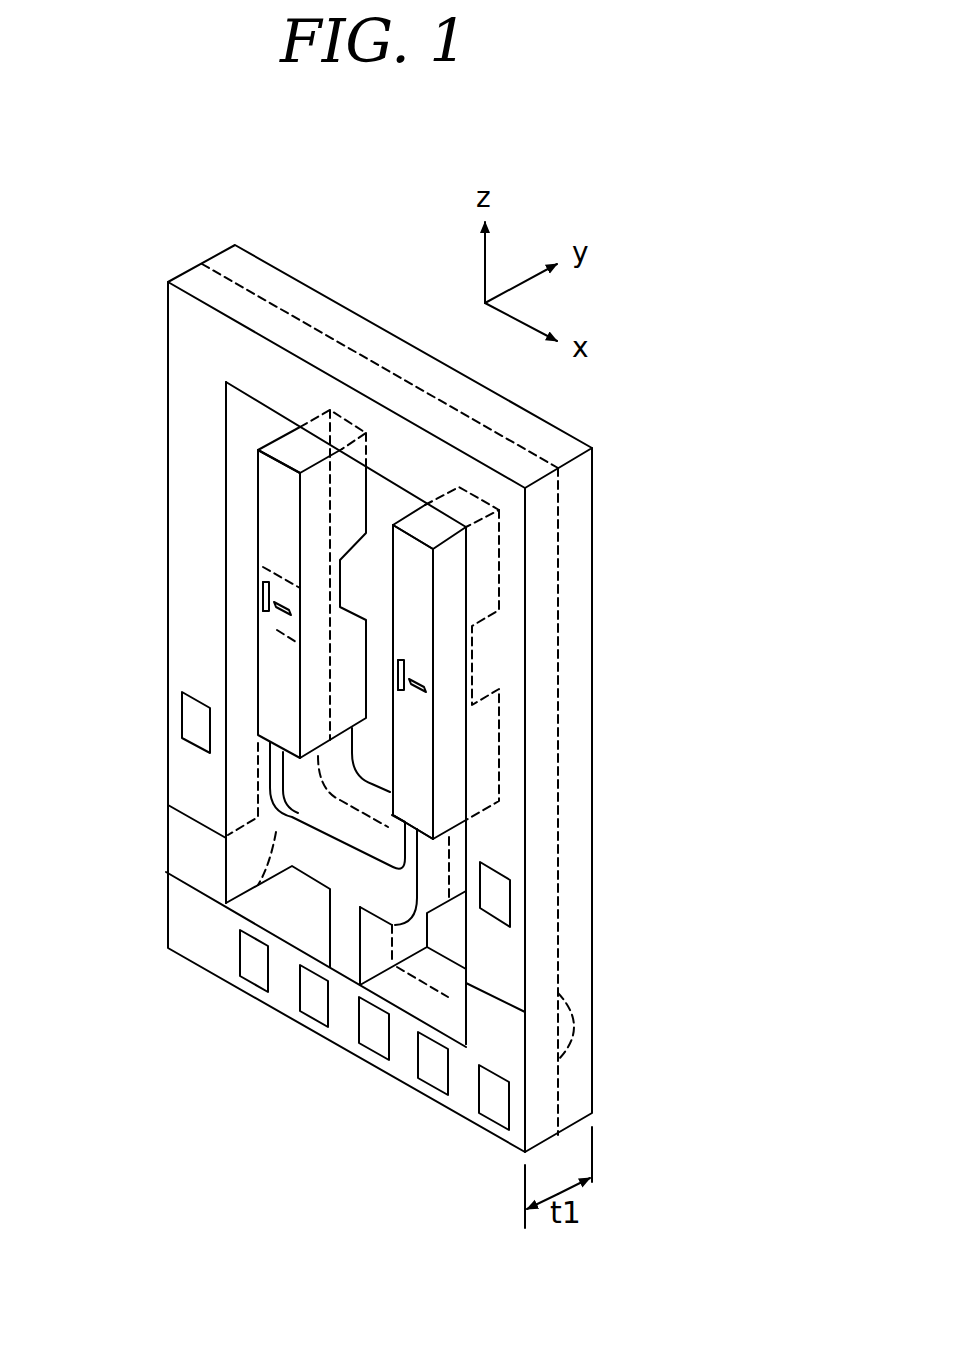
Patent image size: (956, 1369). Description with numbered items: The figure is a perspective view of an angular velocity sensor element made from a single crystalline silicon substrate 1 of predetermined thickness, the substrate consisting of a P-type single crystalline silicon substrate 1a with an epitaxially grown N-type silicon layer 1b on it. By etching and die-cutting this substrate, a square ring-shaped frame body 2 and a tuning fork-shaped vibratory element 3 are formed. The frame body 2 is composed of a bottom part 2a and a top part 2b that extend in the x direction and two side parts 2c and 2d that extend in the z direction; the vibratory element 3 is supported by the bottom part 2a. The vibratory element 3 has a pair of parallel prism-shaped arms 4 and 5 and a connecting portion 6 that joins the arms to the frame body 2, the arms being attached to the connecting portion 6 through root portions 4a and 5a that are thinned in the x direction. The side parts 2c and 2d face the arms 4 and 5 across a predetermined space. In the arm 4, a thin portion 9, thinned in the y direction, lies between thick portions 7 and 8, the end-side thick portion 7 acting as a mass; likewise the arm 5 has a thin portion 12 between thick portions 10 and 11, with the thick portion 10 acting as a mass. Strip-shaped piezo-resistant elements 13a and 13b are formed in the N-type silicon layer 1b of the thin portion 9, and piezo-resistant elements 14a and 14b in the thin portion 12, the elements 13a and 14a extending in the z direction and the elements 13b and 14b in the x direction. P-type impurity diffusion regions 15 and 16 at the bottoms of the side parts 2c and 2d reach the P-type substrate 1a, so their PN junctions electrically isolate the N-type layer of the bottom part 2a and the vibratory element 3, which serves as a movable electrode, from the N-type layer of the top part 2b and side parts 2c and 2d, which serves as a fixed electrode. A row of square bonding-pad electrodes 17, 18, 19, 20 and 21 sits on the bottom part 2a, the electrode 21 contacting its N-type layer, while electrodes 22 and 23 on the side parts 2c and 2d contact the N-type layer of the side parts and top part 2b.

The single crystalline silicon substrate 1 is at (598, 935).
The P-type single crystalline silicon substrate 1a is at (585, 776).
The N-type silicon layer 1b is at (543, 857).
The frame body 2 is at (580, 630).
The bottom part 2a is at (345, 1022).
The top part 2b is at (378, 420).
The side part 2c is at (178, 388).
The side part 2d is at (513, 598).
The tuning fork-shaped vibratory element 3 is at (283, 830).
The arm 4 is at (268, 527).
The root portion 4a is at (273, 785).
The arm 5 is at (405, 572).
The root portion 5a is at (413, 847).
The connecting portion 6 is at (352, 907).
The thick portion 7 is at (259, 471).
The thick portion 8 is at (275, 690).
The thin portion 9 is at (258, 573).
The thick portion 10 is at (405, 543).
The thick portion 11 is at (410, 803).
The thin portion 12 is at (405, 660).
The piezo-resistant element 13a is at (263, 598).
The piezo-resistant element 13b is at (283, 613).
The piezo-resistant element 14a is at (405, 672).
The piezo-resistant element 14b is at (424, 690).
The P-type impurity diffusion region 15 is at (176, 829).
The P-type impurity diffusion region 16 is at (487, 1035).
The electrode 17 is at (255, 975).
The electrode 18 is at (313, 1008).
The electrode 19 is at (377, 1043).
The electrode 20 is at (433, 1073).
The electrode 21 is at (497, 1110).
The electrode 22 is at (188, 718).
The electrode 23 is at (497, 900).